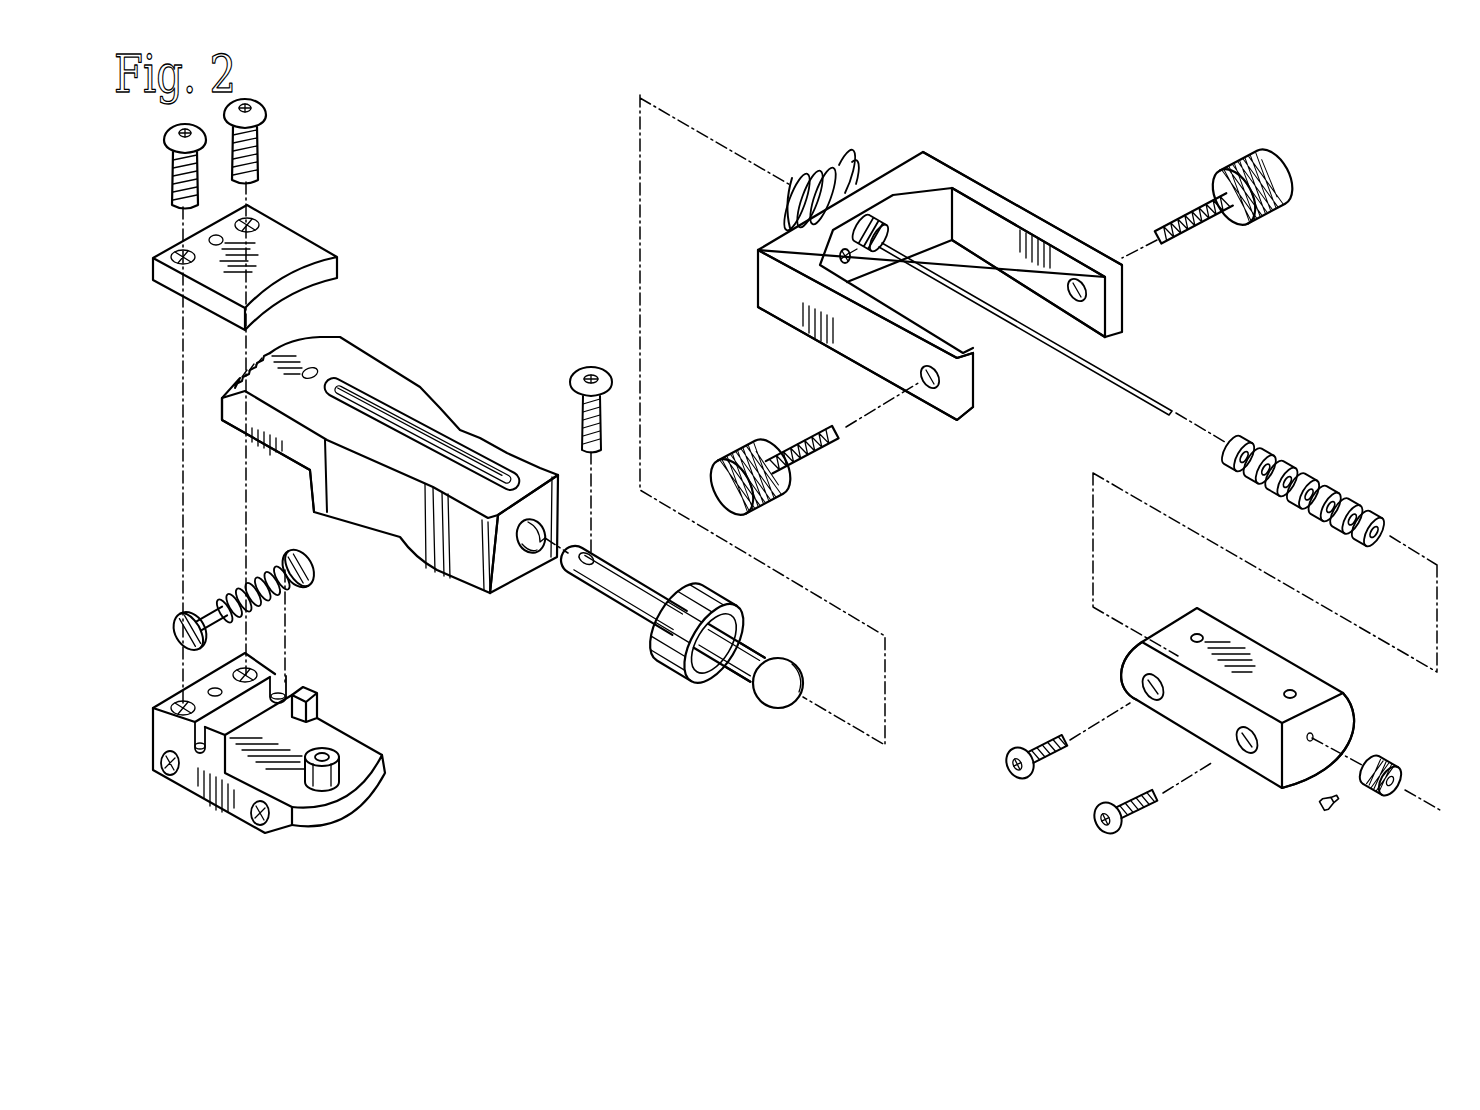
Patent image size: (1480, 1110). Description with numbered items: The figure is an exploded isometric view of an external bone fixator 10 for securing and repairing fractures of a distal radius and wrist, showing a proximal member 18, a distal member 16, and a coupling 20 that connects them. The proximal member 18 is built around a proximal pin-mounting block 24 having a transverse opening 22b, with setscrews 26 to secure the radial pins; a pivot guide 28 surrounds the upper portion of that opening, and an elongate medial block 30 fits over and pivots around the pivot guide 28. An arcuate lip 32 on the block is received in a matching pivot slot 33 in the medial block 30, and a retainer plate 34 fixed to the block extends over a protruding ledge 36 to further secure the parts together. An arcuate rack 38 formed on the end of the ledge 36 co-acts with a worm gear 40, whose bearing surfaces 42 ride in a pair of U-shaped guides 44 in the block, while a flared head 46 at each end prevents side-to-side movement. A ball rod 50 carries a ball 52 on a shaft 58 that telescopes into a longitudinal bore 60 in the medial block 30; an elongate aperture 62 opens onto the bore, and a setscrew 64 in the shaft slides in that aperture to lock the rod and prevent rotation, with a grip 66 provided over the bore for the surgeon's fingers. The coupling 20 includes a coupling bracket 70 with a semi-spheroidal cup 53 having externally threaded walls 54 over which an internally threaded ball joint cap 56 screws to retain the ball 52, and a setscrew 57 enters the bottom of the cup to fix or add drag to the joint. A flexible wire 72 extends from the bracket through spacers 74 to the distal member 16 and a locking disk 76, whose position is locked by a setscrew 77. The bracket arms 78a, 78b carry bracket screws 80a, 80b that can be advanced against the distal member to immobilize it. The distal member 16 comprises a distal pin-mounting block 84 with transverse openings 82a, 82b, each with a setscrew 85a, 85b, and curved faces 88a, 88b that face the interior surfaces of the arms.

The external bone fixator 10 is at (467, 155).
The distal member 16 is at (1371, 626).
The proximal member 18 is at (508, 418).
The coupling 20 is at (1102, 141).
The distal transverse opening 22b is at (323, 756).
The proximal pin-mounting block 24 is at (168, 692).
The setscrew 26 is at (167, 770).
The pivot guide 28 is at (345, 763).
The medial block 30 is at (424, 387).
The arcuate lip 32 is at (345, 800).
The pivot slot 33 is at (303, 477).
The retainer plate 34 is at (298, 239).
The protruding ledge 36 is at (233, 418).
The arcuate rack 38 is at (232, 380).
The worm gear 40 is at (168, 591).
The bearing surfaces 42 is at (222, 620).
The U-shaped guides 44 is at (196, 740).
The flared head 46 is at (172, 623).
The ball rod 50 is at (648, 598).
The ball 52 is at (775, 695).
The semi-spheroidal cup 53 is at (790, 208).
The externally threaded walls 54 is at (828, 176).
The ball joint cap 56 is at (668, 650).
The setscrew 57 is at (853, 265).
The shaft 58 is at (760, 654).
The longitudinal bore 60 is at (533, 553).
The elongate aperture 62 is at (407, 428).
The setscrew 64 is at (591, 368).
The grip 66 is at (555, 474).
The coupling bracket 70 is at (956, 168).
The flexible wire 72 is at (1175, 407).
The spacers 74 is at (1345, 485).
The locking disk 76 is at (1400, 775).
The setscrew 77 is at (1334, 806).
The bracket arm 78a is at (868, 353).
The bracket arm 78b is at (1040, 220).
The bracket screw 80a is at (730, 458).
The bracket screw 80b is at (1247, 165).
The transverse opening 82a is at (1200, 636).
The transverse opening 82b is at (1290, 690).
The distal pin-mounting block 84 is at (1352, 720).
The setscrew 85a is at (1006, 761).
The setscrew 85b is at (1094, 816).
The curved face 88a is at (1130, 686).
The curved face 88b is at (1350, 705).